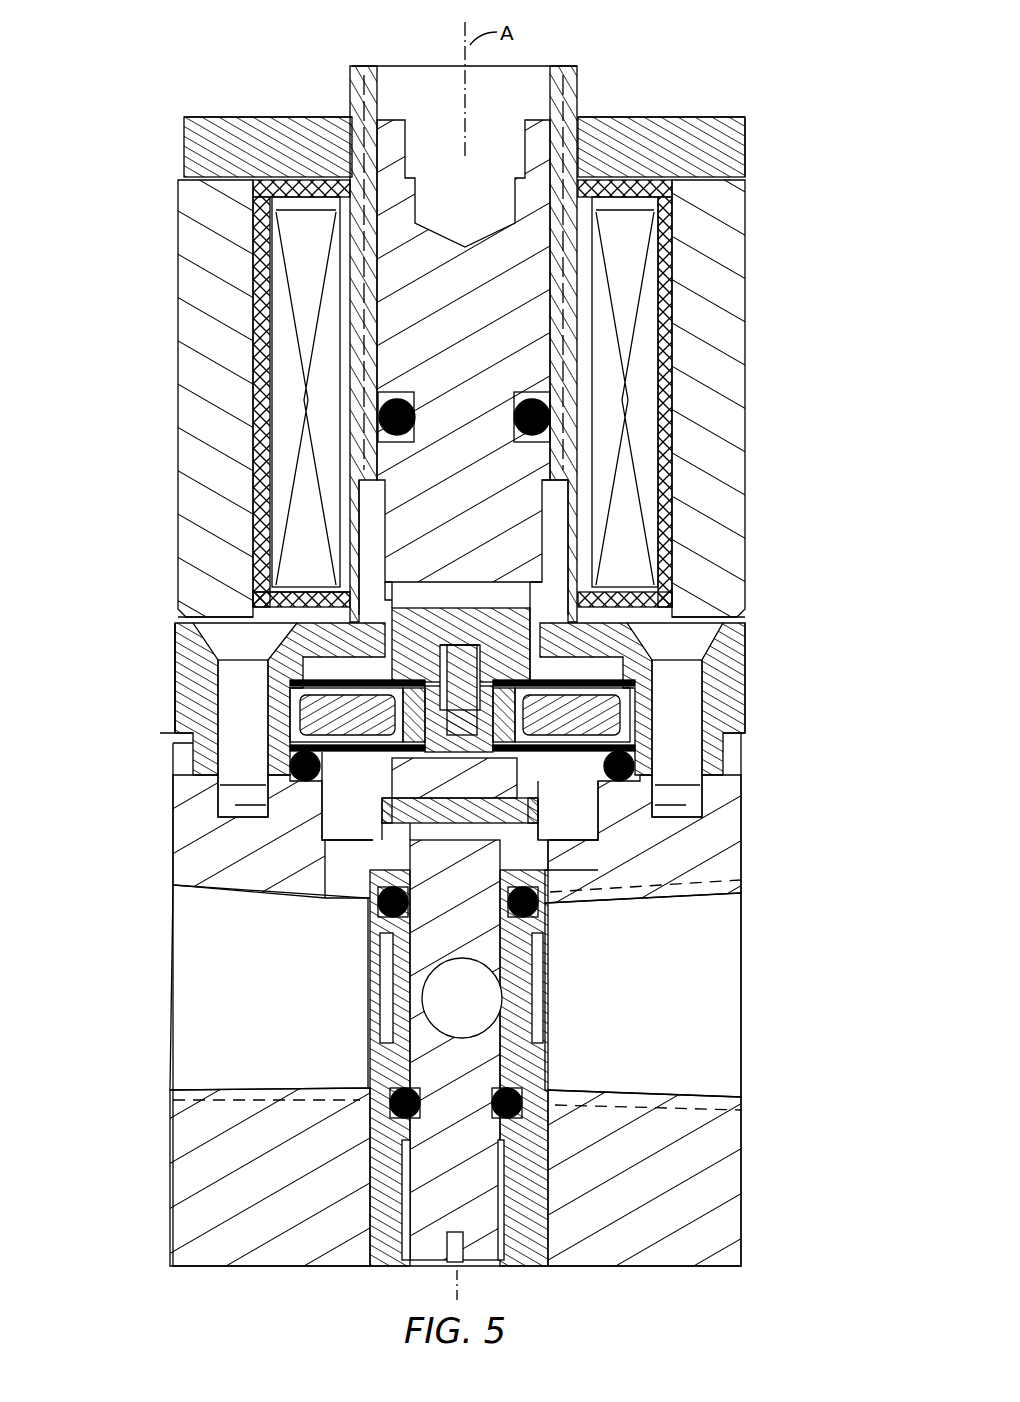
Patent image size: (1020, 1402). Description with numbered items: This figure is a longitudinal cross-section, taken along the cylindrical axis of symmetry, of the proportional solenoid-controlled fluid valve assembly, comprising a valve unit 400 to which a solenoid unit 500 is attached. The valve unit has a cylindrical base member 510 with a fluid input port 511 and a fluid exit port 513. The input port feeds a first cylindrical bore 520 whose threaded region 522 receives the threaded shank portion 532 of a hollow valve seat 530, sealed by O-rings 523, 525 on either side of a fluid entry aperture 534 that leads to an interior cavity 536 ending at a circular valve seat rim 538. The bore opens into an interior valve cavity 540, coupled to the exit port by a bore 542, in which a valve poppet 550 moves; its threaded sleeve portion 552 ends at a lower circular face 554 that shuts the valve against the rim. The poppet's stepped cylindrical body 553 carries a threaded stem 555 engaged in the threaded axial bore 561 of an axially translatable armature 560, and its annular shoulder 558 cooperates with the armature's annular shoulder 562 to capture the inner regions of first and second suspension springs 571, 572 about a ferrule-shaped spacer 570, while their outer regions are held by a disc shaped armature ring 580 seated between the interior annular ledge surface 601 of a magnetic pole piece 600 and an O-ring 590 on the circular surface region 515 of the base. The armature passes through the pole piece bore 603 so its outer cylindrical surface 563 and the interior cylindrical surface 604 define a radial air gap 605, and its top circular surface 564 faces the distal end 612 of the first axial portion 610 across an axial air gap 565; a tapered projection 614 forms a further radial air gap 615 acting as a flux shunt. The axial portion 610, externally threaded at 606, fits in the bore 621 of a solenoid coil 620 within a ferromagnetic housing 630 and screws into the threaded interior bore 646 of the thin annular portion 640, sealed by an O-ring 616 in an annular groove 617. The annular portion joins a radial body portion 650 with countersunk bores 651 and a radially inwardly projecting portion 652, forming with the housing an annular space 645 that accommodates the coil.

The valve unit 400 is at (761, 812).
The solenoid unit 500 is at (761, 303).
The cylindrical base member 510 is at (735, 1190).
The fluid input port 511 is at (715, 982).
The fluid exit port 513 is at (188, 995).
The generally circular surface region 515 is at (655, 790).
The first generally cylindrical bore 520 is at (535, 968).
The threaded region 522 is at (503, 1242).
The O-ring 523 is at (380, 908).
The O-ring 525 is at (395, 1095).
The hollow valve seat 530 is at (525, 1052).
The threaded shank portion 532 is at (415, 1232).
The fluid entry aperture 534 is at (480, 1000).
The interior cavity 536 is at (385, 980).
The circular valve seat rim 538 is at (470, 866).
The interior valve cavity 540 is at (548, 850).
The bore 542 is at (332, 898).
The valve poppet 550 is at (530, 786).
The threaded sleeve portion 552 is at (532, 824).
The stepped cylindrical body 553 is at (520, 768).
The lower circular face 554 is at (388, 824).
The threaded stem 555 is at (398, 760).
The annular shoulder 558 is at (472, 823).
The armature 560 is at (412, 605).
The threaded axial bore 561 is at (465, 645).
The annular shoulder 562 is at (532, 682).
The outer cylindrical surface 563 is at (388, 682).
The top generally circular surface 564 is at (540, 600).
The axial air gap 565 is at (388, 560).
The ferrule-shaped spacer 570 is at (620, 782).
The first suspension spring 571 is at (630, 694).
The second suspension spring 572 is at (625, 735).
The armature ring 580 is at (300, 738).
The O-ring 590 is at (318, 778).
The magnetic pole piece 600 is at (163, 693).
The interior annular ledge surface 601 is at (290, 655).
The generally cylindrical bore 603 is at (622, 638).
The interior cylindrical surface 604 is at (384, 622).
The radial air gap 605 is at (338, 606).
The external threads 606 is at (572, 128).
The first generally axial portion 610 is at (535, 492).
The distal end 612 is at (450, 612).
The tapered projection 614 is at (560, 545).
The radial air gap 615 is at (512, 600).
The O-ring 616 is at (380, 400).
The annular groove 617 is at (385, 430).
The solenoid coil 620 is at (268, 318).
The generally cylindrical bore 621 is at (582, 285).
The housing 630 is at (722, 246).
The second generally annular portion 640 is at (355, 530).
The annular space 645 is at (250, 605).
The threaded interior cylindrical bore 646 is at (380, 66).
The third generally radial body portion 650 is at (170, 630).
The countersunk bores 651 is at (172, 732).
The radially inwardly projecting portion 652 is at (578, 622).